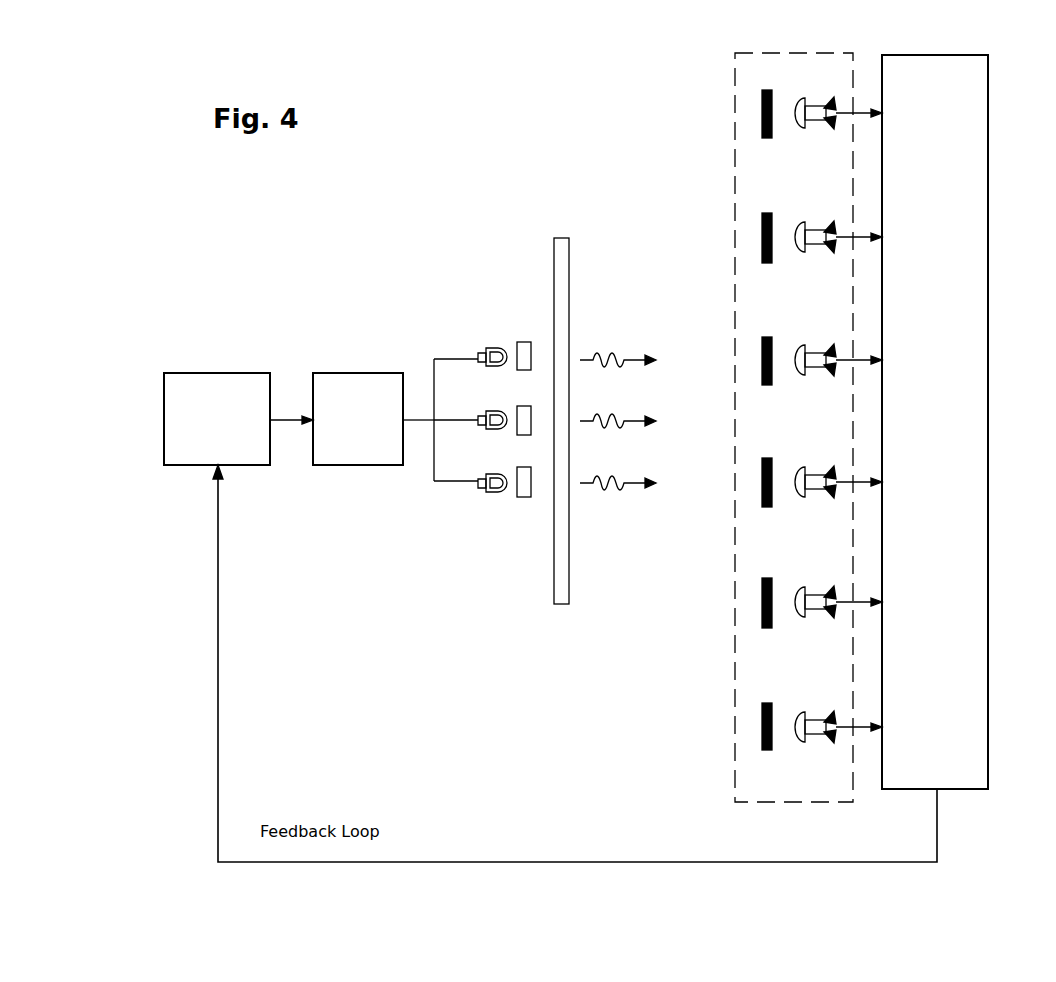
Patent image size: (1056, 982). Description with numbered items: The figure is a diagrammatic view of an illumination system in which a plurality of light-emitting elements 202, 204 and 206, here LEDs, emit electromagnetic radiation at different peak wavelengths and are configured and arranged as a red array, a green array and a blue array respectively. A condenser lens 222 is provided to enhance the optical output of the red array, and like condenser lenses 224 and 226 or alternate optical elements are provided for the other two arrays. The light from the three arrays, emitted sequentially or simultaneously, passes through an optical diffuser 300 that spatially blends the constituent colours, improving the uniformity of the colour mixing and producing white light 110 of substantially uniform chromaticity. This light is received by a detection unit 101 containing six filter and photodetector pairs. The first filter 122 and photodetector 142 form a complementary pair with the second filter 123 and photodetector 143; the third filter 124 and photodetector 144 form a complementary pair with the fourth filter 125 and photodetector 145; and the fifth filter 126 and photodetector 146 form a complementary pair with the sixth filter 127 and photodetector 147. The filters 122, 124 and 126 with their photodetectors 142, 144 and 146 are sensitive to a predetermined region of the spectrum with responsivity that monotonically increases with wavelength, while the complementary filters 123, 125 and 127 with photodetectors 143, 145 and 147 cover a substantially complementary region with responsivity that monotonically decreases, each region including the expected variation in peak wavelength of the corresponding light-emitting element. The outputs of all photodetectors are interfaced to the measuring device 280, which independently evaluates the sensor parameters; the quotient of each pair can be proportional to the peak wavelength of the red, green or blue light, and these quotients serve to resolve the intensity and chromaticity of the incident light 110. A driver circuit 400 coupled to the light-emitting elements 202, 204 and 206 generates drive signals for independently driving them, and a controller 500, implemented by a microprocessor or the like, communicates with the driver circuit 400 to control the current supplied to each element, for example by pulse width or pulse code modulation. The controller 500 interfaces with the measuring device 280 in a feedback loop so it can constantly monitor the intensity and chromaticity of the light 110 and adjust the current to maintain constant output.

The detection unit 101 is at (733, 71).
The white light 110 is at (612, 354).
The first filter 122 is at (769, 90).
The second filter 123 is at (773, 261).
The third filter 124 is at (762, 338).
The fourth filter 125 is at (762, 472).
The fifth filter 126 is at (768, 629).
The sixth filter 127 is at (771, 750).
The photodetector 142 is at (801, 99).
The photodetector 143 is at (793, 222).
The photodetector 144 is at (797, 345).
The photodetector 145 is at (798, 470).
The photodetector 146 is at (800, 589).
The photodetector 147 is at (800, 714).
The light-emitting element 202 is at (486, 362).
The light-emitting element 204 is at (485, 428).
The light-emitting element 206 is at (486, 491).
The condenser lens 222 is at (517, 341).
The condenser lens 224 is at (520, 436).
The condenser lens 226 is at (526, 497).
The measuring device 280 is at (966, 790).
The optical diffuser 300 is at (561, 238).
The driver circuit 400 is at (352, 373).
The controller 500 is at (241, 466).